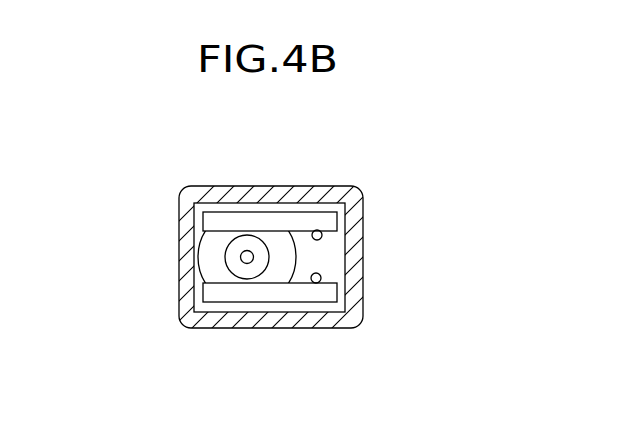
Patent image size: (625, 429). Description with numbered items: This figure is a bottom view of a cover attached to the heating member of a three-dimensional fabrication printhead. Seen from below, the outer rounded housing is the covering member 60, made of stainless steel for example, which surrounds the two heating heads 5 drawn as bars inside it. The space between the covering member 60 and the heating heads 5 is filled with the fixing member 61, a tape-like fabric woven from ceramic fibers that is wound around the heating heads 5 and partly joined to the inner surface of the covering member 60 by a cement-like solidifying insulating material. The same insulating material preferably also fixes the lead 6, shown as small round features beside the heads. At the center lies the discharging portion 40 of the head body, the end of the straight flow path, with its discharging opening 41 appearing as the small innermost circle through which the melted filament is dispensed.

The covering member 60 is at (186, 207).
The fixing member 61 is at (200, 277).
The heating head 5 is at (288, 218).
The lead 6 is at (321, 232).
The discharging portion 40 is at (278, 268).
The discharging opening 41 is at (254, 258).